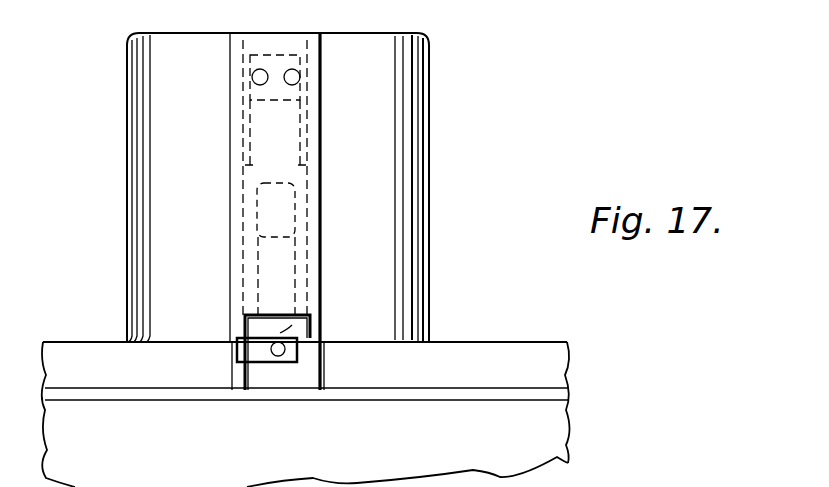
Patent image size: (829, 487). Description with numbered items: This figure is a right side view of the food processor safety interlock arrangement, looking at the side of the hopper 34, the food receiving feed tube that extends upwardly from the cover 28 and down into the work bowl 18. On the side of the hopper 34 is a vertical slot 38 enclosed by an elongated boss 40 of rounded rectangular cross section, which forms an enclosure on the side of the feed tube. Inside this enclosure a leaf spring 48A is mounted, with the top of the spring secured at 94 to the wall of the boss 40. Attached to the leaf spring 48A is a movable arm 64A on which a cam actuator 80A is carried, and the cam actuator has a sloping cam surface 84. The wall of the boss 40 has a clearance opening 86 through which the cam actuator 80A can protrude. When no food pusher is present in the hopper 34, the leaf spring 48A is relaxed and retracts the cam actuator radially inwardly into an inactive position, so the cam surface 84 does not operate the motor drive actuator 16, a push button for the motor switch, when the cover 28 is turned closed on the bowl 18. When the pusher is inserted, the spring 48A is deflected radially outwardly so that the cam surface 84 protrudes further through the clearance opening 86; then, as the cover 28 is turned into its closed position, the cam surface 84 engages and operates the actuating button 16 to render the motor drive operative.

The hopper 34 is at (428, 145).
The vertical slot 38 is at (243, 148).
The boss 40 is at (320, 140).
The leaf spring securement 94 is at (268, 74).
The leaf spring 48A is at (320, 165).
The movable arm 64A is at (305, 262).
The actuating button 16 is at (283, 333).
The clearance opening 86 is at (243, 322).
The cam surface 84 is at (258, 350).
The cam actuator 80A is at (290, 356).
The cover 28 is at (510, 335).
The work bowl 18 is at (597, 436).